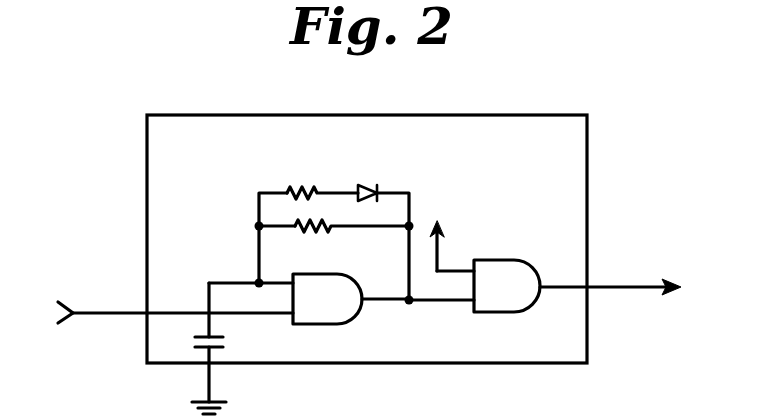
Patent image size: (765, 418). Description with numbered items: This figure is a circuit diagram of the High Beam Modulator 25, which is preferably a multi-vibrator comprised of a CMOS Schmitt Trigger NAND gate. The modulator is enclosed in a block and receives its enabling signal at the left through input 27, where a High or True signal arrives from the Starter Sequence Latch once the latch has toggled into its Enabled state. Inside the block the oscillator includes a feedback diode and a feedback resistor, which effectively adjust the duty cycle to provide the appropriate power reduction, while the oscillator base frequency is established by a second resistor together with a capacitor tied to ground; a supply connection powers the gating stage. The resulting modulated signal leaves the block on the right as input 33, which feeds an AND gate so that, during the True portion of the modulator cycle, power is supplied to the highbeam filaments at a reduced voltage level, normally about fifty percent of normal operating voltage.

The High Beam Modulator 25 is at (147, 180).
The input 27 is at (107, 312).
The input 33 is at (667, 237).